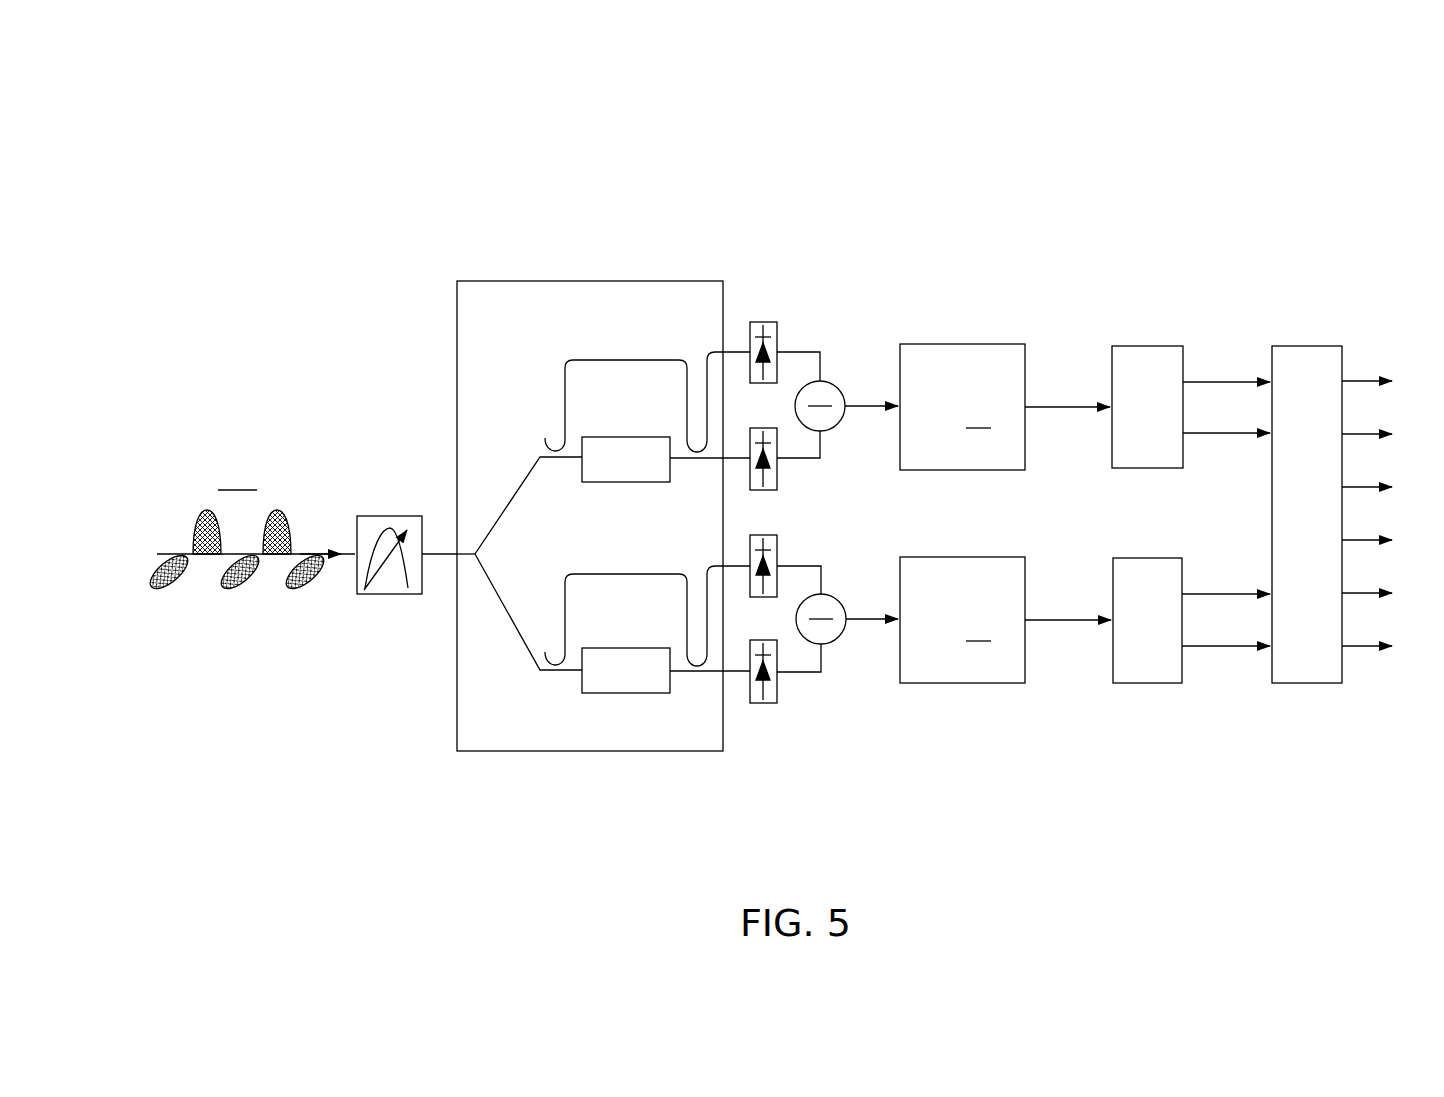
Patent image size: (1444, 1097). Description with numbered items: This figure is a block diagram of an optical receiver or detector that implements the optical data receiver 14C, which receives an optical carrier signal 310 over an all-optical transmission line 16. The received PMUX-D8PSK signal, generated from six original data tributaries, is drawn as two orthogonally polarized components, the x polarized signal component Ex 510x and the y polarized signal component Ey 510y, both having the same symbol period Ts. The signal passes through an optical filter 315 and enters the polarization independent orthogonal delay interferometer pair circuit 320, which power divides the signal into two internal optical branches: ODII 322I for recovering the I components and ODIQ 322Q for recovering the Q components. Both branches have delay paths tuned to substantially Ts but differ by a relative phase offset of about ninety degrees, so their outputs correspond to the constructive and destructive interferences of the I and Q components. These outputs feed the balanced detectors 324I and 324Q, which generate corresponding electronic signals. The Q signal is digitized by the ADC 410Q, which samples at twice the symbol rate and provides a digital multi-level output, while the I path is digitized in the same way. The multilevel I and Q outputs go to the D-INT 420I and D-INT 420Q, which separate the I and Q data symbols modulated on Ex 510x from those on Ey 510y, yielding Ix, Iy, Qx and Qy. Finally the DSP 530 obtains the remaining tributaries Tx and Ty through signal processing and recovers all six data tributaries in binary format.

The optical data receiver 14C is at (486, 806).
The all-optical transmission line 16 is at (327, 552).
The optical carrier signal 310 is at (286, 378).
The optical filter 315 is at (388, 597).
The orthogonal delay interferometer pair circuit 320 is at (515, 281).
The ODII 322I is at (645, 358).
The ODIQ 322Q is at (563, 610).
The balanced detector 324I is at (822, 353).
The balanced detector 324Q is at (822, 658).
The ADC 410Q is at (960, 683).
The D-INT 420I is at (963, 344).
The D-INT 420Q is at (1147, 683).
The x polarized signal component Ex 510x is at (200, 517).
The y polarized signal component Ey 510y is at (235, 585).
The DSP 530 is at (1310, 346).